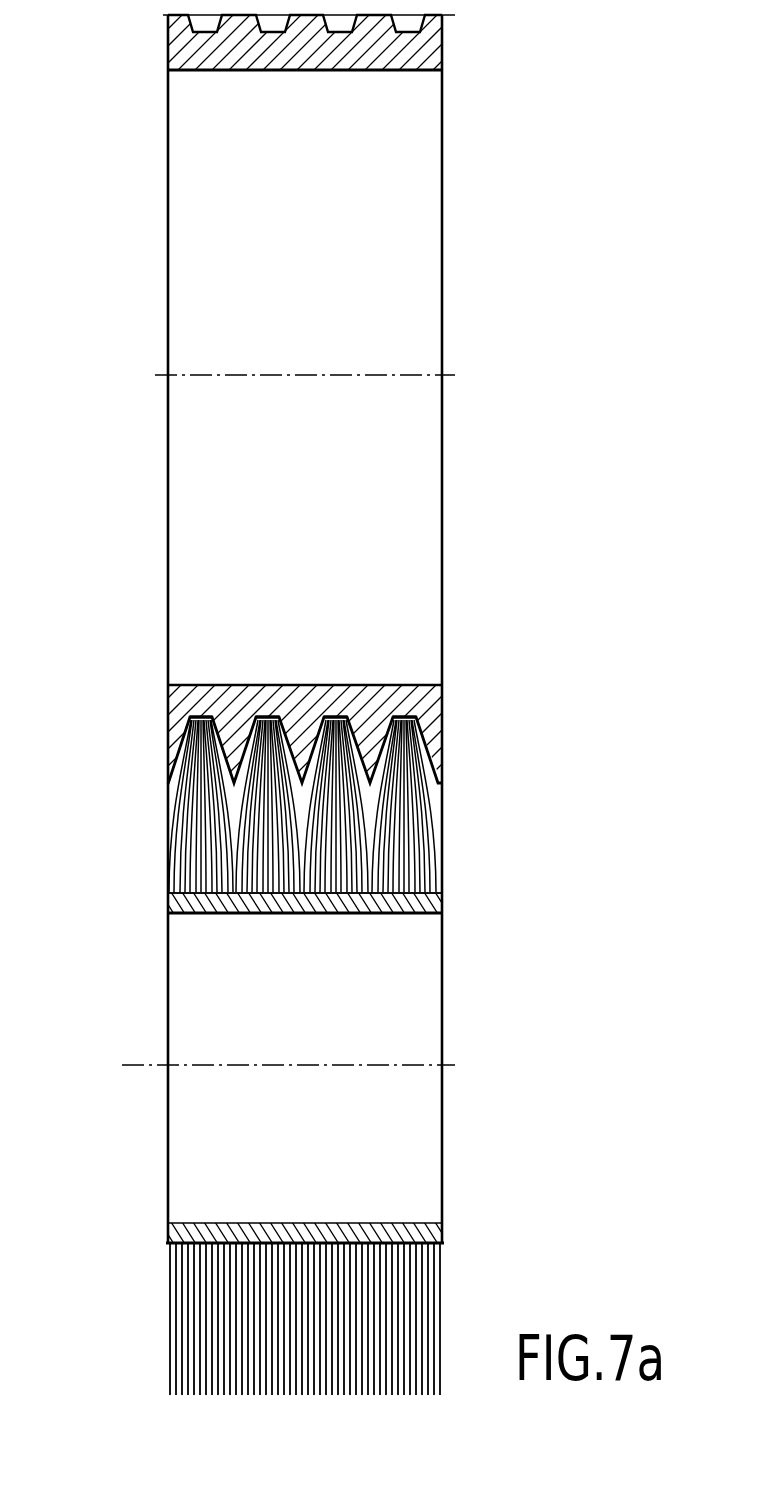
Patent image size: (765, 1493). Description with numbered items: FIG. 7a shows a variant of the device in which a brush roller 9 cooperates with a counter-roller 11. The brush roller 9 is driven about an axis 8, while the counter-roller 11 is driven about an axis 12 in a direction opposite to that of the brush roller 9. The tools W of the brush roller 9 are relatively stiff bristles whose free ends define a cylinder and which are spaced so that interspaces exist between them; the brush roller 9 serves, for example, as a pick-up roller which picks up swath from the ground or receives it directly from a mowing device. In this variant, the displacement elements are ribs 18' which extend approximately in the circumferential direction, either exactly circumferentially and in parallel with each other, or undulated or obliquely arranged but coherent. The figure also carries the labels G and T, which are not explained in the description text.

The axis 8 is at (148, 1068).
The brush roller 9 is at (146, 904).
The counter-roller 11 is at (165, 614).
The axis 12 is at (162, 377).
The ribs 18' is at (302, 736).
The grooves G is at (333, 716).
The support disc T is at (298, 903).
The tools W is at (192, 824).